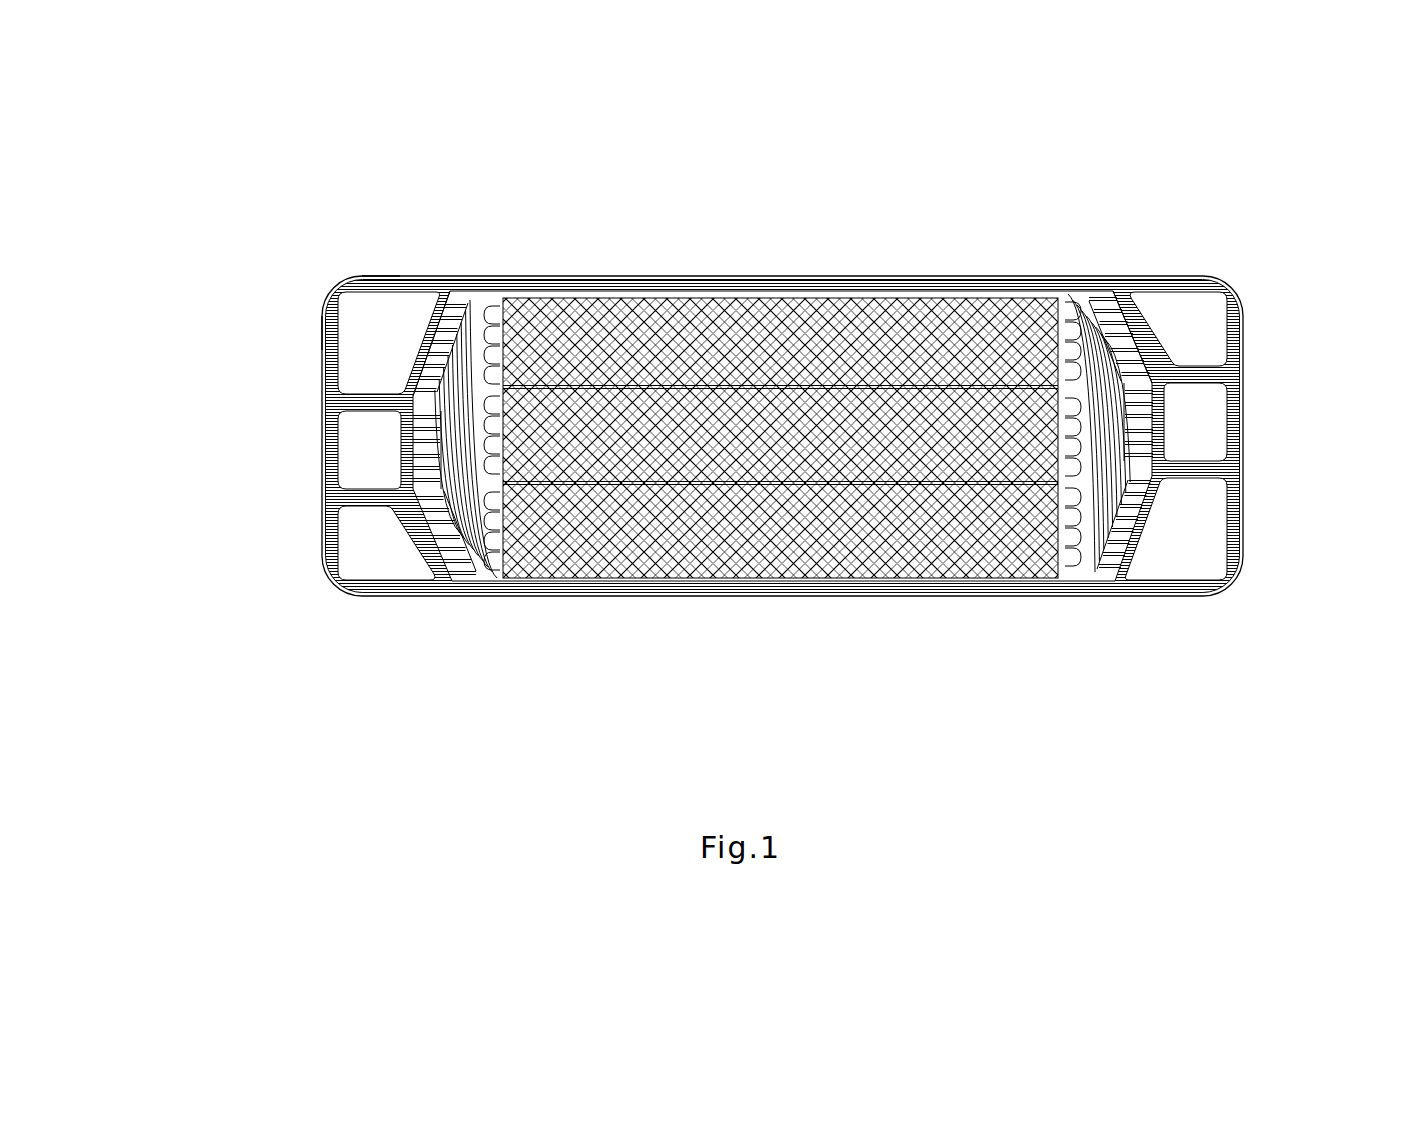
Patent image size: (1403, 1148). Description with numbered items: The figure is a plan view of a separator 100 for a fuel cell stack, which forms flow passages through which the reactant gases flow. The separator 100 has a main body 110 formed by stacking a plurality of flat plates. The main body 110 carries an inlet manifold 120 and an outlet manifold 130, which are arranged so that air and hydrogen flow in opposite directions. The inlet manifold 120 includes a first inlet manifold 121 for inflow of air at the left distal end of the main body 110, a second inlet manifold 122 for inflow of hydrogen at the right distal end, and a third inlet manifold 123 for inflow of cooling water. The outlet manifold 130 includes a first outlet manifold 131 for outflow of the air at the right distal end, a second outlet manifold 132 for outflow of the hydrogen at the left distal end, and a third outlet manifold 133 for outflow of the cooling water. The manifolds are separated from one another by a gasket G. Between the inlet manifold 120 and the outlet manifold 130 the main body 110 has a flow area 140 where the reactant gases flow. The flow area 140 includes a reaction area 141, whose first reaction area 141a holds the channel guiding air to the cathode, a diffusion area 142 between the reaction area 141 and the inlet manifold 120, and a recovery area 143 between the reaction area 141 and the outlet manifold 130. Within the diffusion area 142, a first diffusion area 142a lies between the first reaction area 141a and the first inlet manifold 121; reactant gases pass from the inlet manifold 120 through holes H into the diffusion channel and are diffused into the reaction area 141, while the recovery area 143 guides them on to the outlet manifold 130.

The separator 100 is at (283, 156).
The main body 110 is at (890, 257).
The inlet manifold 120 is at (330, 435).
The first inlet manifold 121 is at (404, 316).
The second inlet manifold 122 is at (1173, 319).
The third inlet manifold 123 is at (358, 446).
The outlet manifold 130 is at (1240, 435).
The first outlet manifold 131 is at (1198, 554).
The second outlet manifold 132 is at (376, 552).
The third outlet manifold 133 is at (1201, 417).
The flow area 140 is at (782, 502).
The reaction area 141 is at (780, 470).
The first reaction area 141a is at (780, 438).
The diffusion area 142 is at (483, 471).
The first diffusion area 142a is at (494, 540).
The recovery area 143 is at (1078, 540).
The holes H is at (462, 293).
The gasket G is at (368, 552).